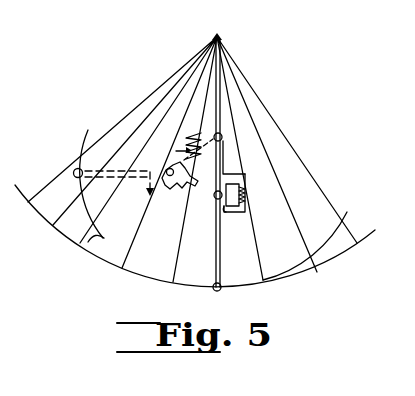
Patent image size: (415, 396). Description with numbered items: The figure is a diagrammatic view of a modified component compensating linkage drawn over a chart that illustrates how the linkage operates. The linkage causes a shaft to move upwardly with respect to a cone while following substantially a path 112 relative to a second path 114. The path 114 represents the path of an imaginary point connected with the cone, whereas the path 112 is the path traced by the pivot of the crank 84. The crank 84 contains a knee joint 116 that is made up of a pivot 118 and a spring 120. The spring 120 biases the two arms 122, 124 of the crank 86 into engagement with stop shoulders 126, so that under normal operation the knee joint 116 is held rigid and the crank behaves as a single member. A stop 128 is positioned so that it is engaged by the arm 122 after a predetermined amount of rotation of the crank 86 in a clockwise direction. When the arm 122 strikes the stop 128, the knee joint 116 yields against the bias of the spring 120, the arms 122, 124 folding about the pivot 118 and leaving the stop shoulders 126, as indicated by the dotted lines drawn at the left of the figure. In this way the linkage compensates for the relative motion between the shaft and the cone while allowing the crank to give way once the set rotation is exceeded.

The crank 84 is at (200, 210).
The crank 86 is at (226, 148).
The path 112 is at (88, 242).
The path 114 is at (133, 272).
The knee joint 116 is at (236, 169).
The pivot 118 is at (216, 199).
The spring 120 is at (248, 198).
The arm 122 is at (224, 150).
The arm 124 is at (142, 165).
The stop shoulders 126 is at (226, 210).
The stop 128 is at (191, 138).